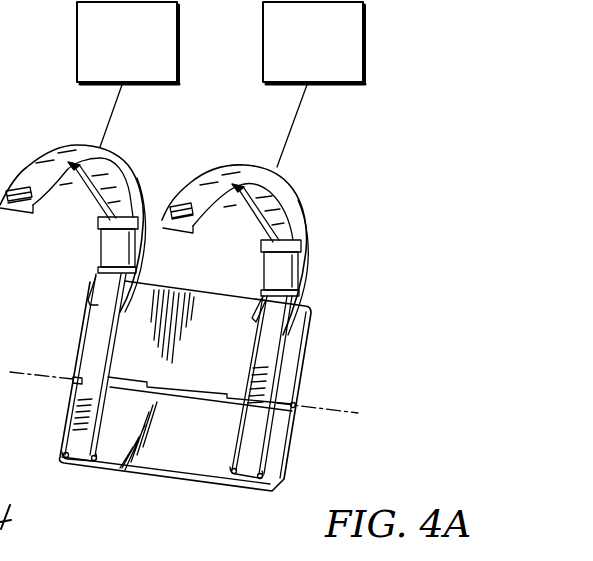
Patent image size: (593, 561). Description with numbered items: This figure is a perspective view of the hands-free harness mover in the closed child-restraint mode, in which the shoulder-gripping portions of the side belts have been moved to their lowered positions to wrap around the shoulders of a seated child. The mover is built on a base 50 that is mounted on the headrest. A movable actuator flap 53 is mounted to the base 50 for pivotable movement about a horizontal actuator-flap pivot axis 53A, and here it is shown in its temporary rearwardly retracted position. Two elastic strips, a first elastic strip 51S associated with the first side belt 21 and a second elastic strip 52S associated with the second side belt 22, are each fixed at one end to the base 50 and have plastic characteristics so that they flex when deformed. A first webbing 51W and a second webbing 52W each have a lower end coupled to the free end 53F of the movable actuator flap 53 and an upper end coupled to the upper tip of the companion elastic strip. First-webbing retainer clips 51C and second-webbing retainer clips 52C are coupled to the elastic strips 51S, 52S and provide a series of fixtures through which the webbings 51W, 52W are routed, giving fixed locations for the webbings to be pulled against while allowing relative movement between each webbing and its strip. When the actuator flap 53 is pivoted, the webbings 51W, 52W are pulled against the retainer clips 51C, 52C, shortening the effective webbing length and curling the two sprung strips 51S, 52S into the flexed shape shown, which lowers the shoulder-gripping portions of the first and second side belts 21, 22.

The first side belt 21 is at (364, 27).
The second side belt 22 is at (178, 30).
The base 50 is at (303, 366).
The first elastic strip 51S is at (230, 167).
The first-webbing retainer clips 51C is at (303, 242).
The first webbing 51W is at (268, 358).
The second elastic strip 52S is at (57, 152).
The second-webbing retainer clips 52C is at (100, 221).
The second webbing 52W is at (100, 333).
The movable actuator flap 53 is at (280, 475).
The horizontal actuator-flap pivot axis 53A is at (350, 415).
The free end of movable actuator flap 53F is at (170, 460).